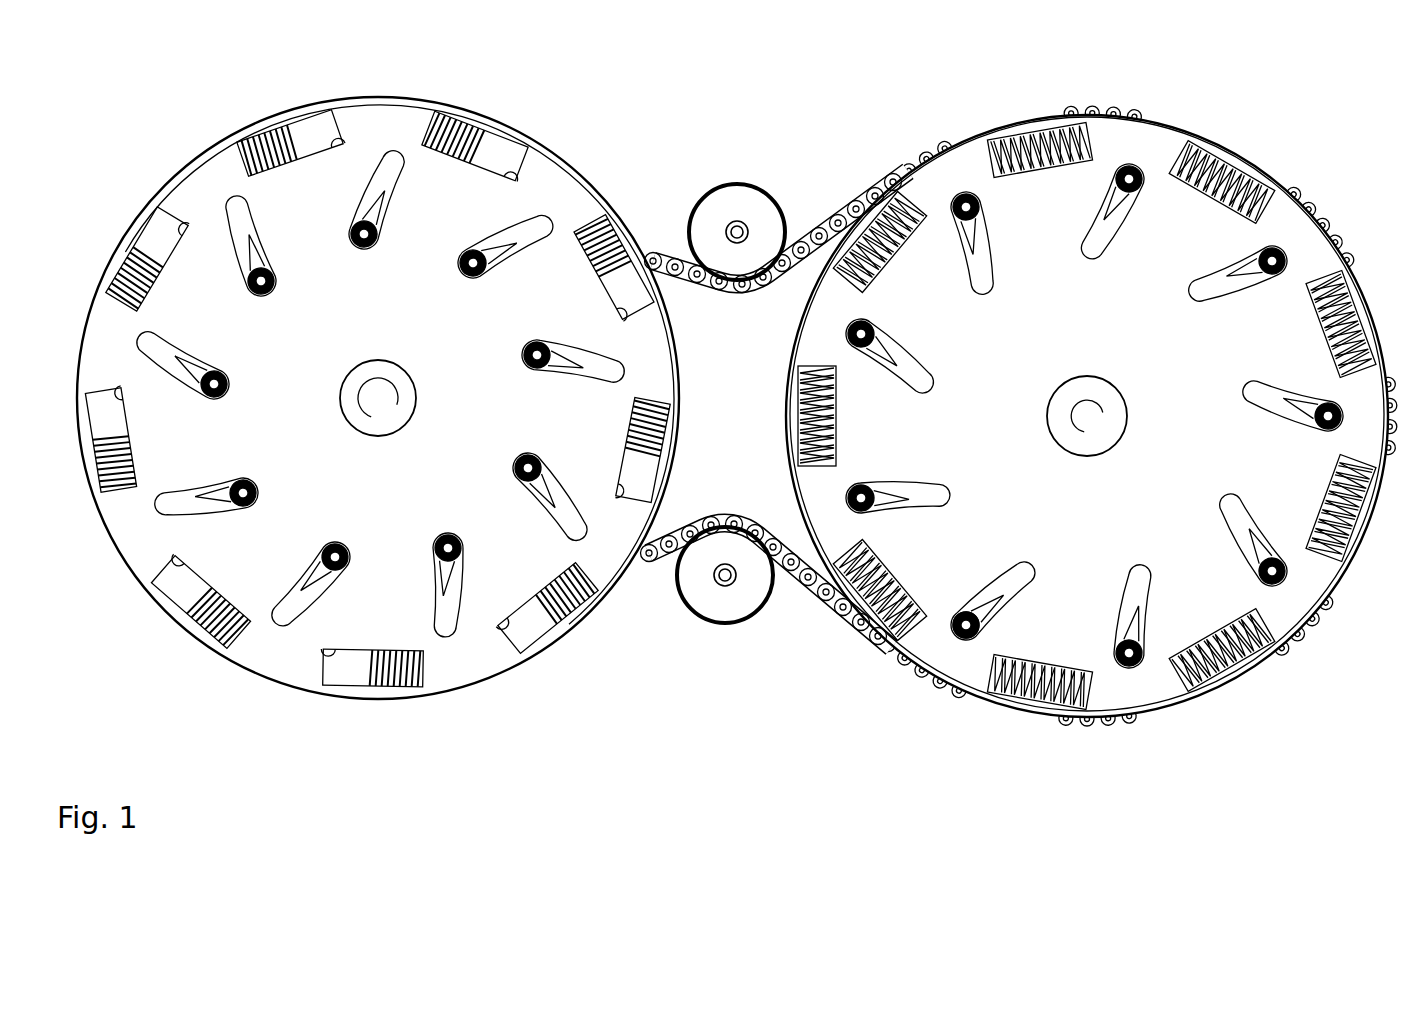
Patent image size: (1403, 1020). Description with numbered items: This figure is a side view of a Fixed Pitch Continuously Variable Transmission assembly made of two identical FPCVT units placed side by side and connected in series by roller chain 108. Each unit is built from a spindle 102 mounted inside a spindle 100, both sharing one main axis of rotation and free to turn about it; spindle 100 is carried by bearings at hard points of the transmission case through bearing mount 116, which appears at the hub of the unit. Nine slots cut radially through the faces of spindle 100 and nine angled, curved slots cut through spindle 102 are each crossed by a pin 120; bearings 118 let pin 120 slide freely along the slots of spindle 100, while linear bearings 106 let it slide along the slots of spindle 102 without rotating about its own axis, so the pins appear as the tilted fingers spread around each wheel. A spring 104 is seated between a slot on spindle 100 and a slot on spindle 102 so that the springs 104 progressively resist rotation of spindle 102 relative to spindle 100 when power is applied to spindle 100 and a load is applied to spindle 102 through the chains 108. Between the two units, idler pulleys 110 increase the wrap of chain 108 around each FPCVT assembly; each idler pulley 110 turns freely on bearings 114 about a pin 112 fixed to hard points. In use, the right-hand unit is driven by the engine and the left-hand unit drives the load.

The spindle 100 is at (196, 180).
The spindle 102 is at (321, 121).
The spring 104 is at (446, 128).
The linear bearing 106 is at (488, 232).
The roller chain 108 is at (673, 247).
The idler pulley 110 is at (719, 184).
The pin 112 is at (743, 229).
The bearing 114 is at (739, 226).
The bearing mount 116 is at (1072, 440).
The bearing 118 is at (954, 634).
The pin 120 is at (963, 636).